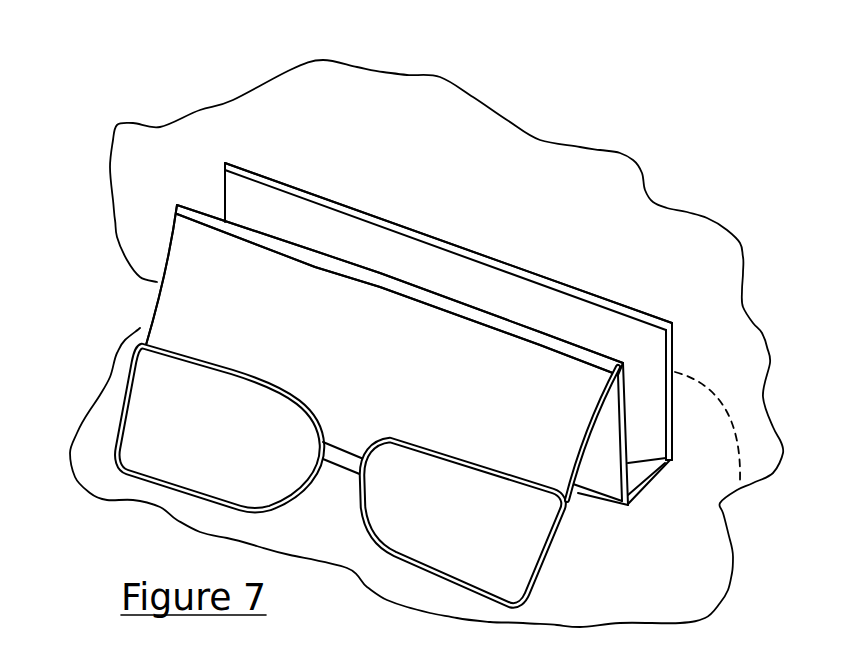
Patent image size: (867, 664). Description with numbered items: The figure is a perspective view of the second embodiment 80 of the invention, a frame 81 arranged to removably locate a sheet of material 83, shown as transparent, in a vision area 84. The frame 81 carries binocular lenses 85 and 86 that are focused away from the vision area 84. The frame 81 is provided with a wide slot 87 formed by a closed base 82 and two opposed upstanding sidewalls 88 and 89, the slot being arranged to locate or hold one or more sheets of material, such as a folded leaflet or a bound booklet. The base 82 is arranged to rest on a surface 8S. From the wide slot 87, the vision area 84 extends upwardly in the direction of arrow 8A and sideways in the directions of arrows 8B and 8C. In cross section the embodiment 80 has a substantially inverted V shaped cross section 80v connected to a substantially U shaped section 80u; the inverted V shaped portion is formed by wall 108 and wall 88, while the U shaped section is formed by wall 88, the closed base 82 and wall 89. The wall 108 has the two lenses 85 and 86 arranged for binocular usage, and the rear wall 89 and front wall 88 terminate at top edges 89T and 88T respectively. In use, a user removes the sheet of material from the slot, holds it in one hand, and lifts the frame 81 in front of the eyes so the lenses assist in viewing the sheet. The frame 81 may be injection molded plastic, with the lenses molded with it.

The second embodiment 80 is at (109, 105).
The substantially U shaped section 80u is at (468, 293).
The substantially inverted V shaped cross section 80v is at (594, 505).
The frame 81 is at (160, 327).
The closed base 82 is at (647, 487).
The sheet of material 83 is at (386, 104).
The vision area 84 is at (572, 217).
The binocular lens 85 is at (232, 453).
The binocular lens 86 is at (472, 541).
The wide slot 87 is at (572, 322).
The sidewall 88 is at (617, 470).
The top edge 88T is at (325, 262).
The sidewall 89 is at (660, 360).
The top edge 89T is at (337, 160).
The wall 108 is at (254, 336).
The arrow 8A is at (418, 275).
The arrow 8B is at (212, 193).
The arrow 8C is at (640, 410).
The surface 8S is at (625, 617).